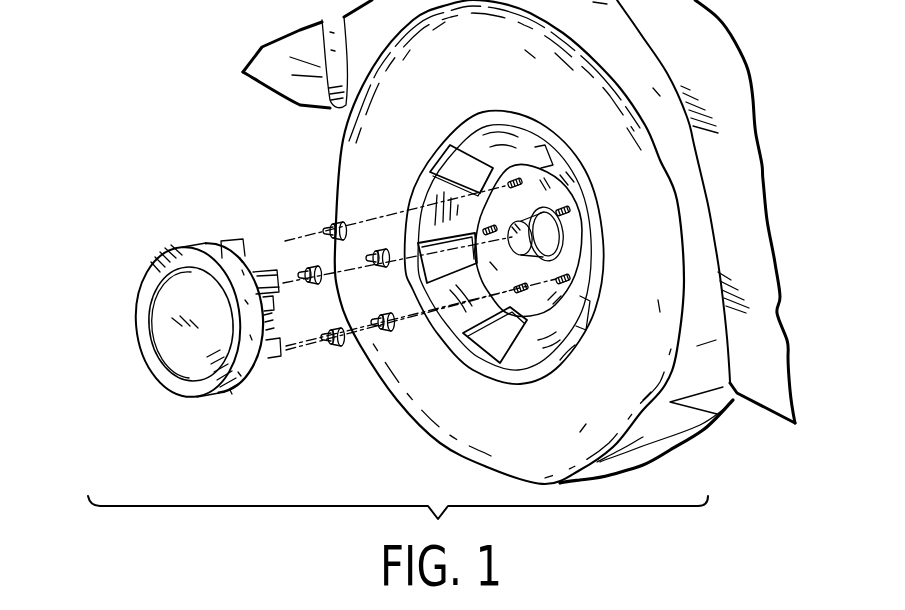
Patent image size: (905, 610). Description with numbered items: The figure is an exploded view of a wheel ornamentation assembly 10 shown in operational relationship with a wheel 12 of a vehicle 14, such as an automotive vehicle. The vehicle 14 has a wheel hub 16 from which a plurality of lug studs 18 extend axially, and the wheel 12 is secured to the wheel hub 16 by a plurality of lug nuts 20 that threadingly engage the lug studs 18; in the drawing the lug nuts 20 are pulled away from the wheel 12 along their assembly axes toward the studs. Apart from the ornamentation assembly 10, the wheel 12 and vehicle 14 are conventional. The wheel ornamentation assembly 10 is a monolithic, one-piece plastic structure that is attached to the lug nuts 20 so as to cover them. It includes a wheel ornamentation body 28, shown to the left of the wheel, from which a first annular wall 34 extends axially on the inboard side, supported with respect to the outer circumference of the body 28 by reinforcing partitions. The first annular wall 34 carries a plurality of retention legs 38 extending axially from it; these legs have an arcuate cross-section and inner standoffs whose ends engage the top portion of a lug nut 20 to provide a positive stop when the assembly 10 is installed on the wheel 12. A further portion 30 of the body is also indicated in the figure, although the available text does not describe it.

The wheel ornamentation assembly 10 is at (122, 220).
The wheel 12 is at (435, 195).
The vehicle 14 is at (279, 74).
The wheel hub 16 is at (568, 249).
The lug studs 18 is at (532, 292).
The lug nuts 20 is at (322, 217).
The wheel ornamentation body 28 is at (194, 322).
The center lens 30 is at (193, 345).
The first annular wall 34 is at (223, 247).
The retention legs 38 is at (284, 360).